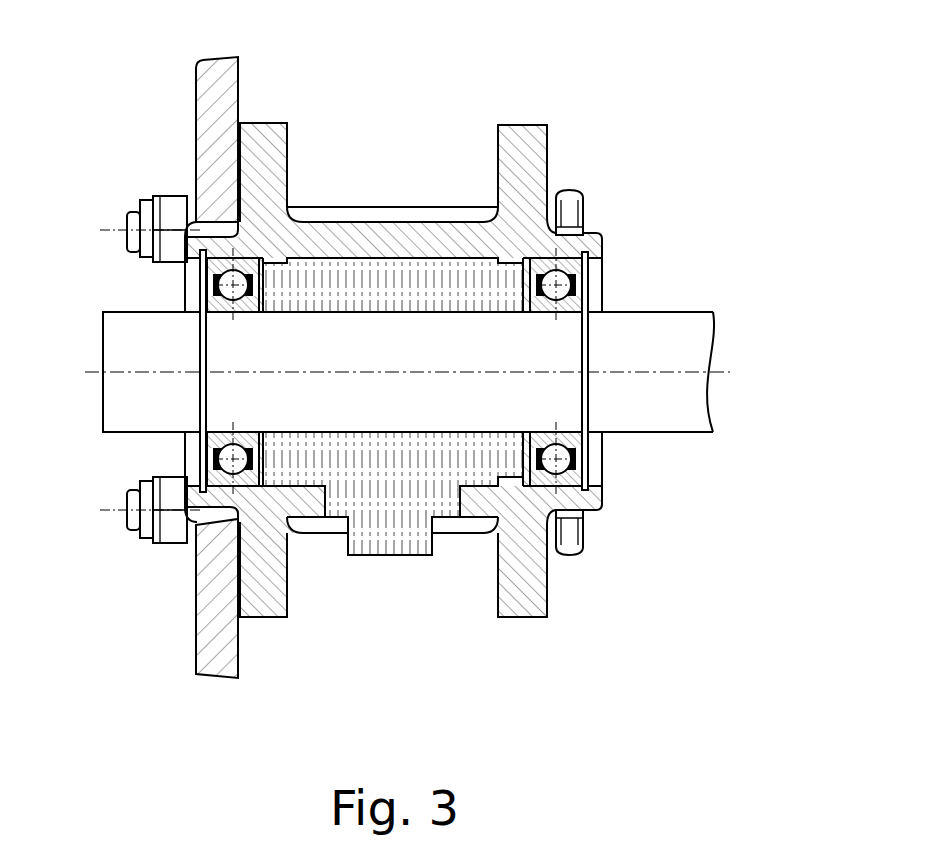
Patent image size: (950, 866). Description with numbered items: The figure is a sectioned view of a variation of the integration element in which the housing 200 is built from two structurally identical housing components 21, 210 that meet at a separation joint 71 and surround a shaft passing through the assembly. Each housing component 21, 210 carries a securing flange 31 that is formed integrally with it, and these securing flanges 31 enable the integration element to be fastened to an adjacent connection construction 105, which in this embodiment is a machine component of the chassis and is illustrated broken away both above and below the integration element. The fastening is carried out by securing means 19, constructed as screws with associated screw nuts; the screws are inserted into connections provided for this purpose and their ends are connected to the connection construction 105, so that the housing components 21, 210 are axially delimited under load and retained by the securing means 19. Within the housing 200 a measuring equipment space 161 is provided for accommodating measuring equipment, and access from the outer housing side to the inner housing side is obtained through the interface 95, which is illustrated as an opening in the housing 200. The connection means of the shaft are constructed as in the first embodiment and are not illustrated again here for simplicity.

The connection construction 105 is at (205, 92).
The housing component 21 is at (262, 122).
The housing component 210 is at (520, 127).
The separation joint 71 is at (397, 240).
The securing means 19 is at (572, 200).
The measuring equipment space 161 is at (428, 300).
The housing 200 is at (555, 582).
The interface 95 is at (392, 520).
The securing flange 31 is at (262, 600).